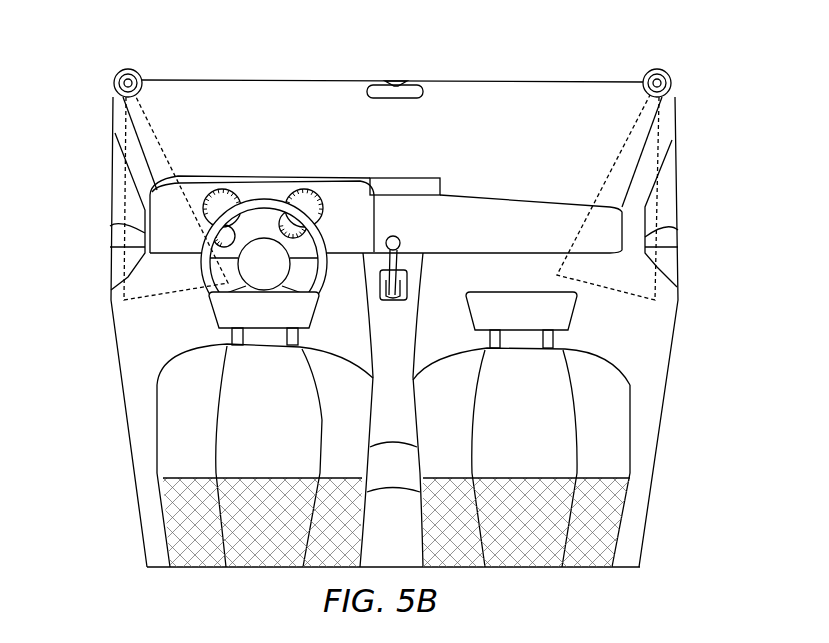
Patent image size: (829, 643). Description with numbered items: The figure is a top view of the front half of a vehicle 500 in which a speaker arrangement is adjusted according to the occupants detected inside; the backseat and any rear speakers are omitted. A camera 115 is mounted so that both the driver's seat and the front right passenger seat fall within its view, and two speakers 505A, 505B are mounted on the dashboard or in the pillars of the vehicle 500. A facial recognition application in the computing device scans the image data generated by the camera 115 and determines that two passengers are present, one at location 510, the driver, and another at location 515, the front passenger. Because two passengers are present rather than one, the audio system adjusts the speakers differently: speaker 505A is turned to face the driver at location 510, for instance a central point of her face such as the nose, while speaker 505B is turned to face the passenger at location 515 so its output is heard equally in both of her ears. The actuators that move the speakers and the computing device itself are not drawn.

The vehicle 500 is at (508, 79).
The camera 115 is at (407, 178).
The speaker 505A is at (128, 67).
The speaker 505B is at (659, 68).
The location 510 is at (198, 338).
The location 515 is at (592, 342).